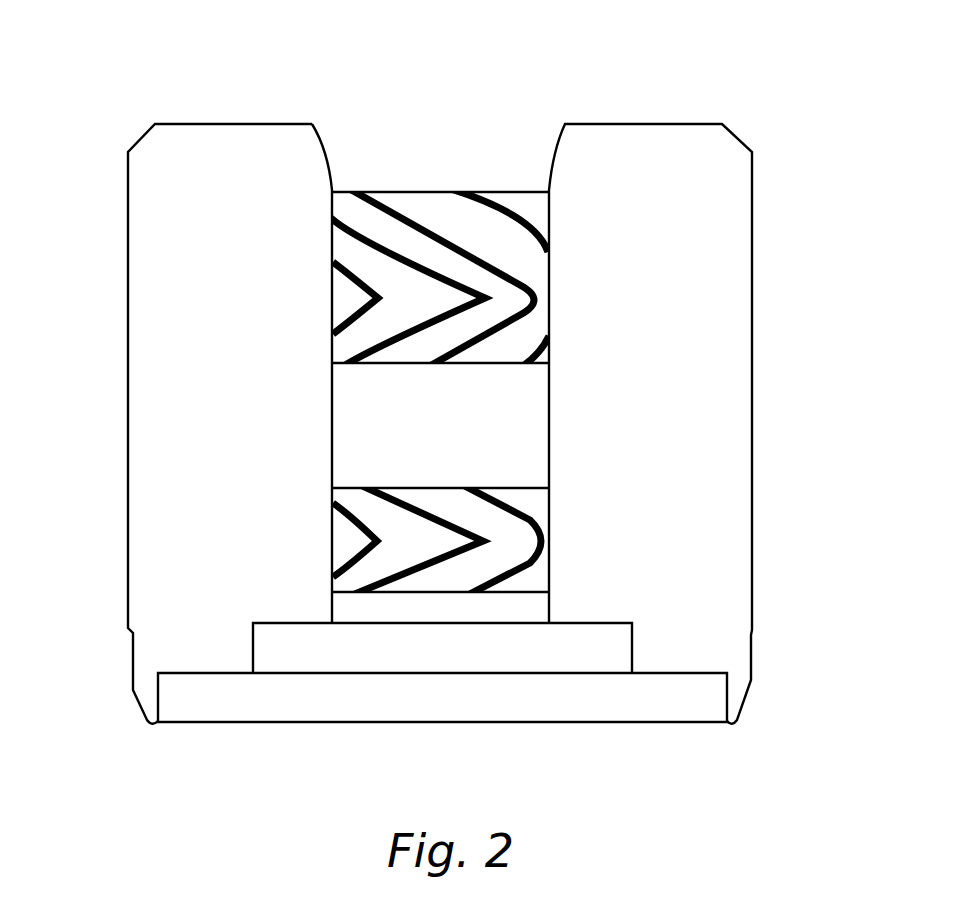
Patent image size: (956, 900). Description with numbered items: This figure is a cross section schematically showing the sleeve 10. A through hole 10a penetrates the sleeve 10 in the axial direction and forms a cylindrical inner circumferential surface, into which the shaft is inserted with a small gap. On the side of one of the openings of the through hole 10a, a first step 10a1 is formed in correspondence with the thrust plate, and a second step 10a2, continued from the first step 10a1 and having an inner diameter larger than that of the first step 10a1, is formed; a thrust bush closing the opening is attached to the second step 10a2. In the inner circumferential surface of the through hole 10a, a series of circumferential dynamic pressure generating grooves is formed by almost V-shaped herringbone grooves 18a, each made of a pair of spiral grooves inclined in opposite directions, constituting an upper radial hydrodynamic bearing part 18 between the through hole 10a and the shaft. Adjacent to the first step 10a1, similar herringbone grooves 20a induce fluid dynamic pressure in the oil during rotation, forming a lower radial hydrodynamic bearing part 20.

The sleeve 10 is at (235, 165).
The through hole 10a is at (336, 422).
The first step 10a1 is at (632, 643).
The second step 10a2 is at (727, 684).
The upper radial hydrodynamic bearing part 18 is at (385, 280).
The herringbone grooves 18a is at (517, 265).
The lower radial hydrodynamic bearing part 20 is at (390, 531).
The herringbone grooves 20a is at (483, 542).